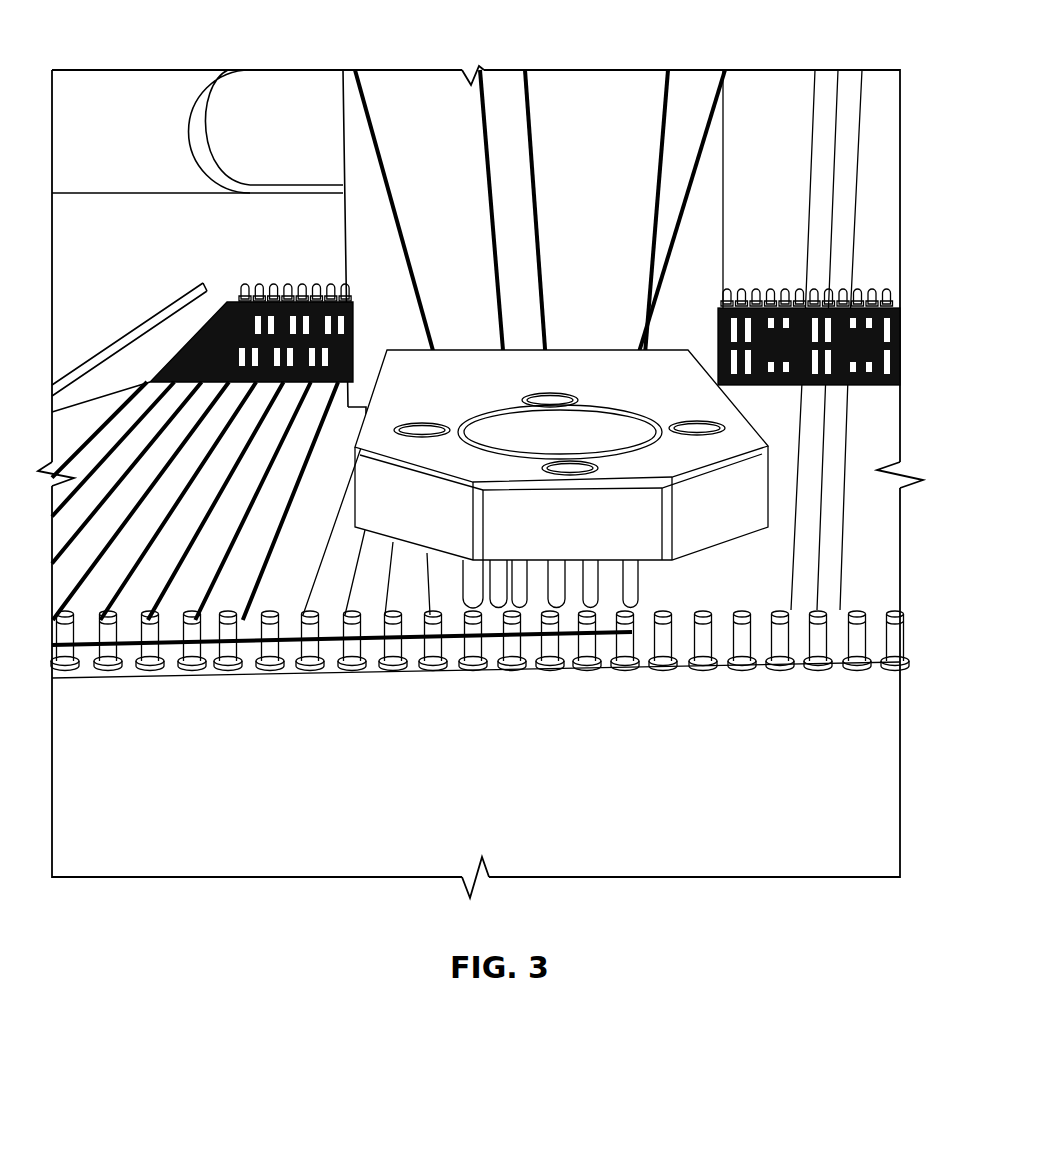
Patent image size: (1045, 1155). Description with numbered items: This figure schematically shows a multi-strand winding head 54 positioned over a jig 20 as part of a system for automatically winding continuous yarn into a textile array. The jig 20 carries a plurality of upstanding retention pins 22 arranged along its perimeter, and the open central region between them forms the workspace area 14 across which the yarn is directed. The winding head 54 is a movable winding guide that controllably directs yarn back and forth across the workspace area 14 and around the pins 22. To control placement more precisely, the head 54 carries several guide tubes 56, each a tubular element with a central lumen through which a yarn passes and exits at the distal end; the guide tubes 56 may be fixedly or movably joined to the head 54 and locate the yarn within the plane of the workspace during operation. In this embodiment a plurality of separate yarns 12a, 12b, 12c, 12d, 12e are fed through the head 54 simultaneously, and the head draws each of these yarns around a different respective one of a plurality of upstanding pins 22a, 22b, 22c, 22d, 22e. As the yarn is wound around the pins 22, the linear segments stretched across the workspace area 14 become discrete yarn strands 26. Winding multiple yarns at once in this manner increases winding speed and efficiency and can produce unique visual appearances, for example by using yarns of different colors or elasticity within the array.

The yarn 12a is at (372, 108).
The yarn 12b is at (484, 108).
The yarn 12c is at (534, 110).
The yarn 12d is at (667, 107).
The yarn 12e is at (722, 98).
The workspace area 14 is at (861, 441).
The jig 20 is at (864, 711).
The retention pins 22 is at (853, 610).
The upstanding pin 22a is at (473, 618).
The upstanding pin 22b is at (510, 618).
The upstanding pin 22c is at (548, 618).
The upstanding pin 22d is at (588, 616).
The upstanding pin 22e is at (633, 615).
The yarn strand 26 is at (222, 648).
The winding head 54 is at (733, 437).
The guide tube 56 is at (640, 578).